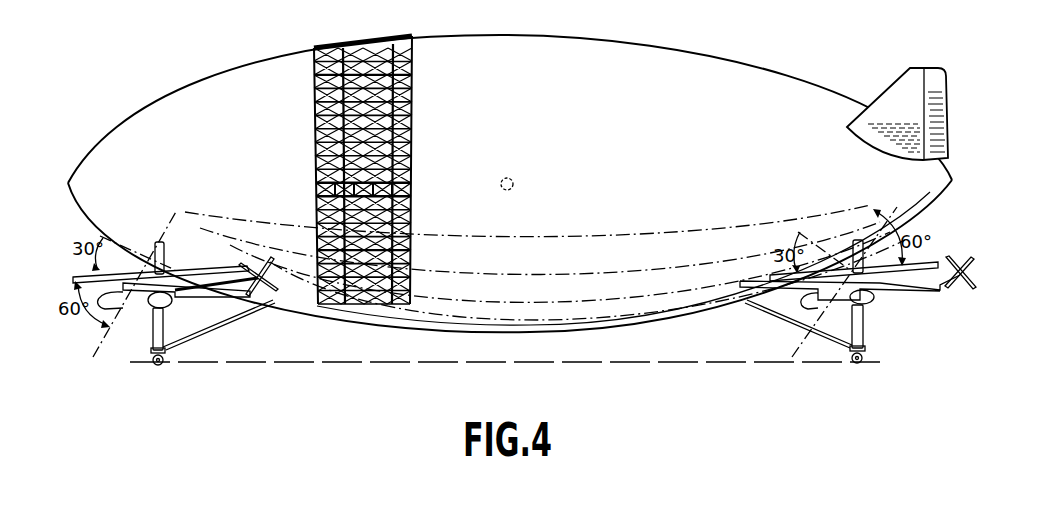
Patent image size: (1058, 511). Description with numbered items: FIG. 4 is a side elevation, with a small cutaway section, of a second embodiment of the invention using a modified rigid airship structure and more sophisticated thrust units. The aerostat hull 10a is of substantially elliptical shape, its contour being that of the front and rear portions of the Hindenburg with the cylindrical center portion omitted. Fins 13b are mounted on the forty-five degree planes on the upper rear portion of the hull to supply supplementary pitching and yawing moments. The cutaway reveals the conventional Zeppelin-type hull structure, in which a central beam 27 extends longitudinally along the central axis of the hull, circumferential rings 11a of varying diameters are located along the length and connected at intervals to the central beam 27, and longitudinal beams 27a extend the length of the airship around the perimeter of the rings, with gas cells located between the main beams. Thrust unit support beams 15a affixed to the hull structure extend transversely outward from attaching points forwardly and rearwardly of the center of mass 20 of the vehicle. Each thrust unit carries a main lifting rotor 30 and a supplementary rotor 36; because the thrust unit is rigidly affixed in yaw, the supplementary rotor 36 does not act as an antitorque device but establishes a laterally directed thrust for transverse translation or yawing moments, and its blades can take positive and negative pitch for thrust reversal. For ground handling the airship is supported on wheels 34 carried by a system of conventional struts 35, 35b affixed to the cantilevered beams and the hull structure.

The aerostat hull 10a is at (250, 60).
The circumferential rings 11a is at (345, 52).
The fins 13b is at (908, 68).
The central beam 27 is at (410, 184).
The longitudinal beams 27a is at (408, 74).
The center of mass 20 is at (515, 184).
The main lifting rotor 30 is at (222, 262).
The supplementary rotor 36 is at (257, 268).
The thrust unit support beams 15a is at (168, 300).
The struts 35 is at (152, 332).
The struts 35b is at (203, 333).
The wheels 34 is at (163, 364).